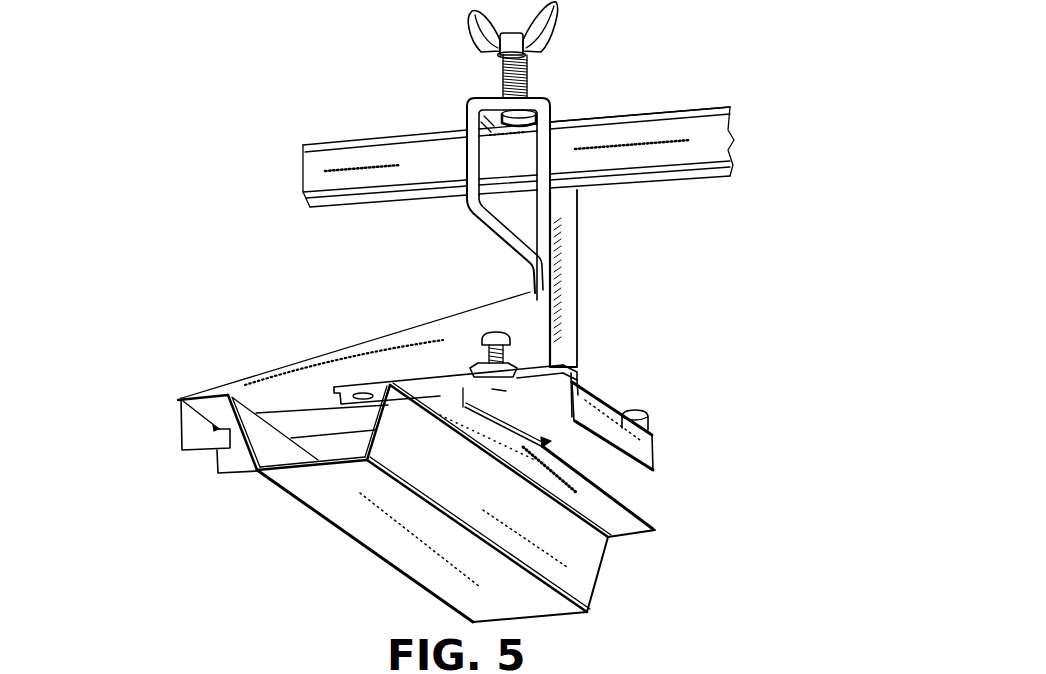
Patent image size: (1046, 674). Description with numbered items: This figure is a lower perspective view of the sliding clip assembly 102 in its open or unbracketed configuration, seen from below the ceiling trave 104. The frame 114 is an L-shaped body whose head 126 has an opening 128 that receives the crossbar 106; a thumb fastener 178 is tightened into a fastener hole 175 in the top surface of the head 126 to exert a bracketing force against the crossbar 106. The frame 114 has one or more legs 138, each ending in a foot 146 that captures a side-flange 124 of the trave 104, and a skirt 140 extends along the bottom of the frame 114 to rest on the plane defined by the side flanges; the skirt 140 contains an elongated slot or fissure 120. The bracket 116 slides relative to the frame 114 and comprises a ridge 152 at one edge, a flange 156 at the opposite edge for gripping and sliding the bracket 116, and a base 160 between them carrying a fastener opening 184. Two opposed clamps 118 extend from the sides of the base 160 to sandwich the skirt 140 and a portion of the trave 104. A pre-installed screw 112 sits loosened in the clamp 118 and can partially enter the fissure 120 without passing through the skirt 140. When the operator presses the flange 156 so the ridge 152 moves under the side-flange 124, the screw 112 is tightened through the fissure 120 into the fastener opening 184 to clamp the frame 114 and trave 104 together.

The sliding clip assembly 102 is at (148, 217).
The trave 104 is at (428, 473).
The crossbar 106 is at (340, 157).
The screw 112 is at (508, 331).
The frame 114 is at (570, 243).
The bracket 116 is at (660, 423).
The clamp 118 is at (586, 368).
The fissure 120 is at (372, 396).
The side-flange 124 is at (184, 396).
The head 126 is at (560, 116).
The opening 128 is at (455, 160).
The leg 138 is at (250, 380).
The skirt 140 is at (437, 378).
The foot 146 is at (201, 450).
The ridge 152 is at (542, 440).
The flange 156 is at (651, 457).
The base 160 is at (610, 540).
The fastener hole 175 is at (533, 108).
The thumb fastener 178 is at (556, 13).
The fastener opening 184 is at (499, 393).